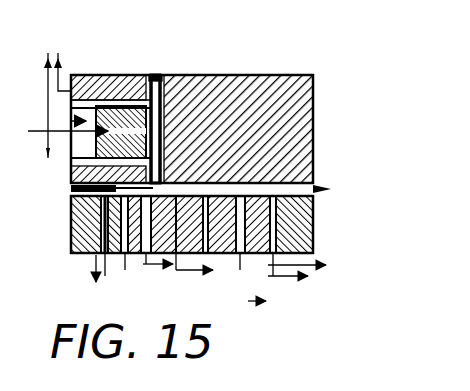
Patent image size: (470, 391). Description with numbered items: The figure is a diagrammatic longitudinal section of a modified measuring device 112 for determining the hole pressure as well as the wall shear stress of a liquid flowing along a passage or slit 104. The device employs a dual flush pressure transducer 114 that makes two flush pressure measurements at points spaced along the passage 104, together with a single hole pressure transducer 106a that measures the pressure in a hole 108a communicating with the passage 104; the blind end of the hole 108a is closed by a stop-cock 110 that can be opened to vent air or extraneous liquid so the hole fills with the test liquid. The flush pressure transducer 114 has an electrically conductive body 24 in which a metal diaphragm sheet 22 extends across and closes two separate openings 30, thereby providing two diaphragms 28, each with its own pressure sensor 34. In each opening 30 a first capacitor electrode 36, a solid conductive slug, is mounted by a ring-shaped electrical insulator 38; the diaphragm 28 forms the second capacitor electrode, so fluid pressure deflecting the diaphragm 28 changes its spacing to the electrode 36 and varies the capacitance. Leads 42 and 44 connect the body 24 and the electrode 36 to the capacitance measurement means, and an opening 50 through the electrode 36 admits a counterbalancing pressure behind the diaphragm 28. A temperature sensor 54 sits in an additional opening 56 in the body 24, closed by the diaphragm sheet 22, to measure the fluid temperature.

The diaphragm sheet 22 is at (175, 67).
The body 24 is at (146, 67).
The diaphragm 28 is at (152, 117).
The opening 30 is at (96, 68).
The pressure sensor 34 is at (63, 112).
The first capacitor electrode 36 is at (88, 140).
The ring-shaped electrical insulator 38 is at (63, 158).
The lead 42 is at (98, 64).
The lead 44 is at (50, 83).
The opening 50 is at (152, 138).
The temperature sensor 54 is at (63, 208).
The temperature sensor opening 56 is at (80, 247).
The passage 104 is at (63, 194).
The hole pressure transducer 106a is at (98, 60).
The hole 108a is at (162, 67).
The stop-cock 110 is at (155, 67).
The measuring device 112 is at (322, 68).
The dual flush pressure transducer 114 is at (310, 194).